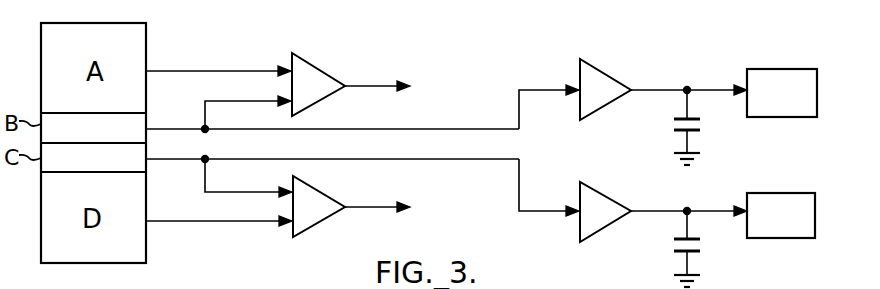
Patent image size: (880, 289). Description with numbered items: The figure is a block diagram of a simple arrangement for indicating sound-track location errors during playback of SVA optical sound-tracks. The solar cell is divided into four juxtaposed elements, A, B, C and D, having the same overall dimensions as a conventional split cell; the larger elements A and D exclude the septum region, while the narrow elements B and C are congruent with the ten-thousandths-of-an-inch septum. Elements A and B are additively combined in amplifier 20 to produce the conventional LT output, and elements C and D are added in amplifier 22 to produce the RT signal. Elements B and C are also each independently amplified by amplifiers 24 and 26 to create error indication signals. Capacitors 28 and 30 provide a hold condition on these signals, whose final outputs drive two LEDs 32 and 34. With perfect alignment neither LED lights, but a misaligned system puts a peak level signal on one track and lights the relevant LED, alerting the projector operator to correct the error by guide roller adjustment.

The amplifier 20 is at (312, 65).
The amplifier 22 is at (318, 223).
The amplifier 24 is at (600, 71).
The amplifier 26 is at (597, 232).
The capacitor 28 is at (701, 125).
The capacitor 30 is at (701, 247).
The LED 32 is at (815, 70).
The LED 34 is at (812, 194).